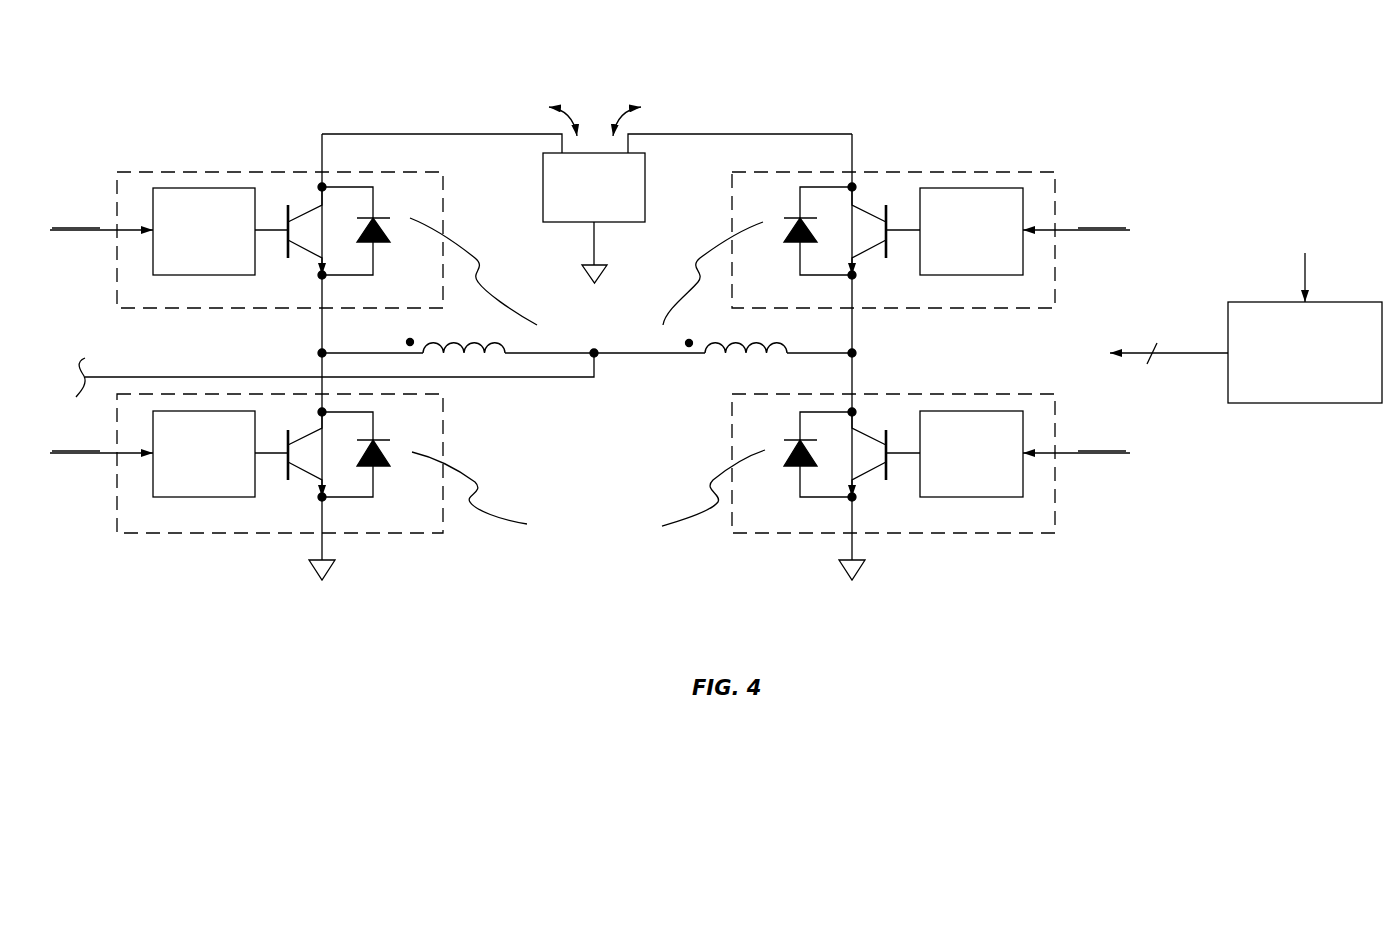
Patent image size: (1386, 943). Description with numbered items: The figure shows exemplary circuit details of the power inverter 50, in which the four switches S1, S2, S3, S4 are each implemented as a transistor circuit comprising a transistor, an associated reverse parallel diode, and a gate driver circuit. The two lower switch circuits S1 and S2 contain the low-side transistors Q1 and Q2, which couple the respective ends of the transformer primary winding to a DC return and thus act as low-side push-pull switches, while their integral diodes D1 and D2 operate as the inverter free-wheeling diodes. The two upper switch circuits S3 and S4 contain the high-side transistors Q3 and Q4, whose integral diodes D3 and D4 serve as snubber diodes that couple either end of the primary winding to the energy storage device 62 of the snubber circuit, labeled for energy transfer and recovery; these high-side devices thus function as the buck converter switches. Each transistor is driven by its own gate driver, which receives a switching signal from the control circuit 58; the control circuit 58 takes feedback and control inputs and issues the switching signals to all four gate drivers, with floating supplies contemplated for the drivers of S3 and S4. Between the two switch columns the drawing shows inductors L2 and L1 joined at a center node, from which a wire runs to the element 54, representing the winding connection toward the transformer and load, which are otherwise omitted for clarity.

The power inverter 50 is at (1142, 141).
The transformer winding connection 54 is at (65, 395).
The control circuit 58 is at (1317, 387).
The energy storage device (ESD) 62 is at (606, 200).
The transistor Q1 is at (857, 429).
The transistor Q2 is at (317, 429).
The transistor Q3 is at (857, 206).
The transistor Q4 is at (317, 206).
The free-wheeling diode D1 is at (798, 468).
The free-wheeling diode D2 is at (376, 468).
The snubber diode D3 is at (798, 245).
The snubber diode D4 is at (376, 245).
The inductor L1 is at (723, 335).
The inductor L2 is at (458, 335).
The switch S1 is at (1052, 526).
The switch S2 is at (152, 526).
The switch S3 is at (1052, 302).
The switch S4 is at (152, 302).